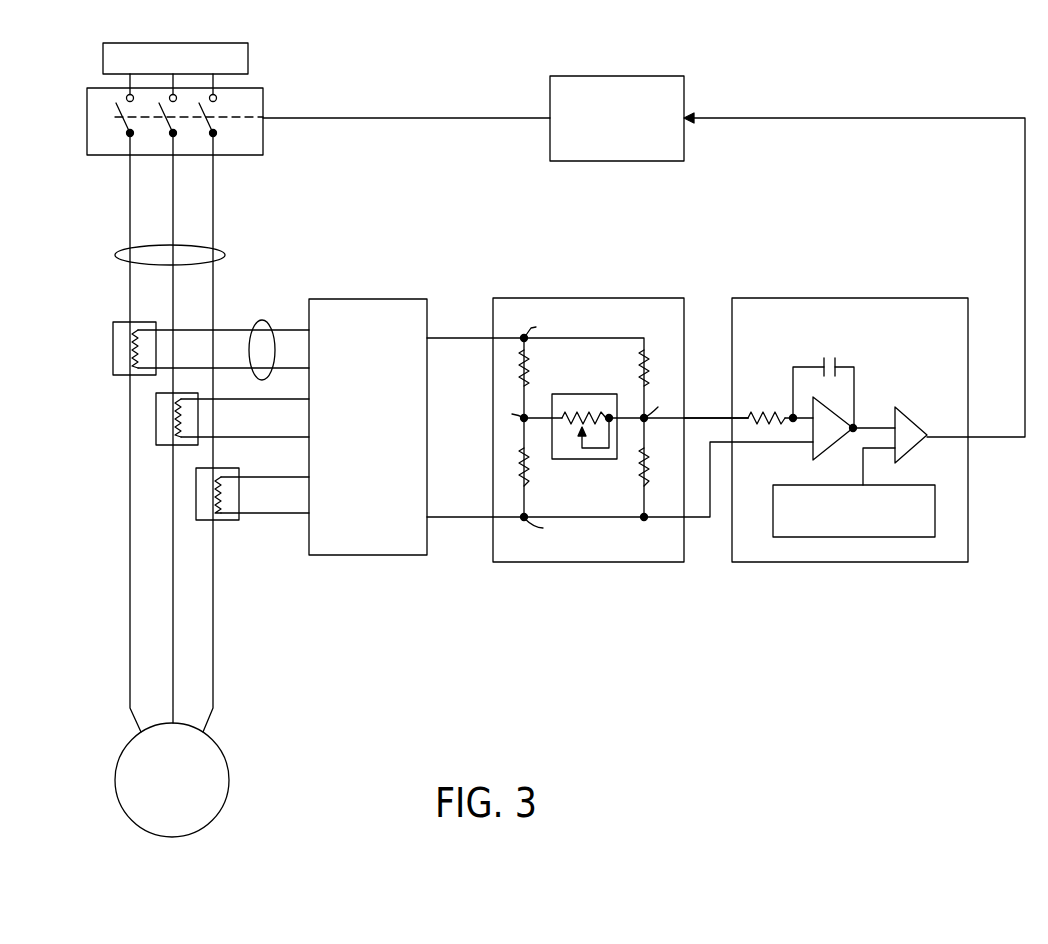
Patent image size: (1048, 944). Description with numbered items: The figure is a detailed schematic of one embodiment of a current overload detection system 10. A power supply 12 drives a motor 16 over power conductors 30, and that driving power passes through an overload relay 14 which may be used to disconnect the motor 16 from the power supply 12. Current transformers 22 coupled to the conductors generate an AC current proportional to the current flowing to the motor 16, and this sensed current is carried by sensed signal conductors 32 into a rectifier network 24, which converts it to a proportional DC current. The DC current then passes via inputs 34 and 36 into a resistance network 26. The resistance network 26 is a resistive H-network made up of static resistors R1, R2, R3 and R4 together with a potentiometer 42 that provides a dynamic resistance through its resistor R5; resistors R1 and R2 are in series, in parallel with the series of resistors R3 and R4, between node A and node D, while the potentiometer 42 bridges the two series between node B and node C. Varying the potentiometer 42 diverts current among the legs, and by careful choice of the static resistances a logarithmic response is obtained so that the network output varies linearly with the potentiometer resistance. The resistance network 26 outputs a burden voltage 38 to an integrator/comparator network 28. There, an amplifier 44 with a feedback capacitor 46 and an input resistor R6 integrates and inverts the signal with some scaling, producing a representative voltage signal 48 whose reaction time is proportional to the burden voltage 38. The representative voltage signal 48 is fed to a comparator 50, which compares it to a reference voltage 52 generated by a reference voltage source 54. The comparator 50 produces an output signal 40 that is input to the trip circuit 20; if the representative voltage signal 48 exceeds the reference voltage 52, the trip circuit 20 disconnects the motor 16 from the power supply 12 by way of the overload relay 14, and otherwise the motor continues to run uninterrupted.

The system 10 is at (560, 610).
The power supply 12 is at (250, 50).
The overload relay 14 is at (263, 132).
The motor 16 is at (215, 740).
The trip circuit 20 is at (622, 136).
The current transformers 22 is at (113, 355).
The rectifier network 24 is at (362, 299).
The resistance network 26 is at (653, 410).
The integrator/comparator network 28 is at (850, 423).
The power conductors 30 is at (222, 250).
The sensed signal conductors 32 is at (262, 320).
The input 34 is at (452, 338).
The input 36 is at (478, 517).
The burden voltage 38 is at (690, 418).
The output signal 40 is at (978, 437).
The potentiometer 42 is at (582, 428).
The amplifier 44 is at (843, 447).
The feedback capacitor 46 is at (835, 362).
The representative voltage signal 48 is at (867, 423).
The comparator 50 is at (908, 413).
The reference voltage 52 is at (882, 449).
The reference voltage source 54 is at (857, 538).
The static resistor R1 is at (523, 380).
The static resistor R2 is at (523, 480).
The static resistor R3 is at (663, 373).
The static resistor R4 is at (663, 472).
The resistor R5 is at (570, 427).
The input resistor R6 is at (775, 408).